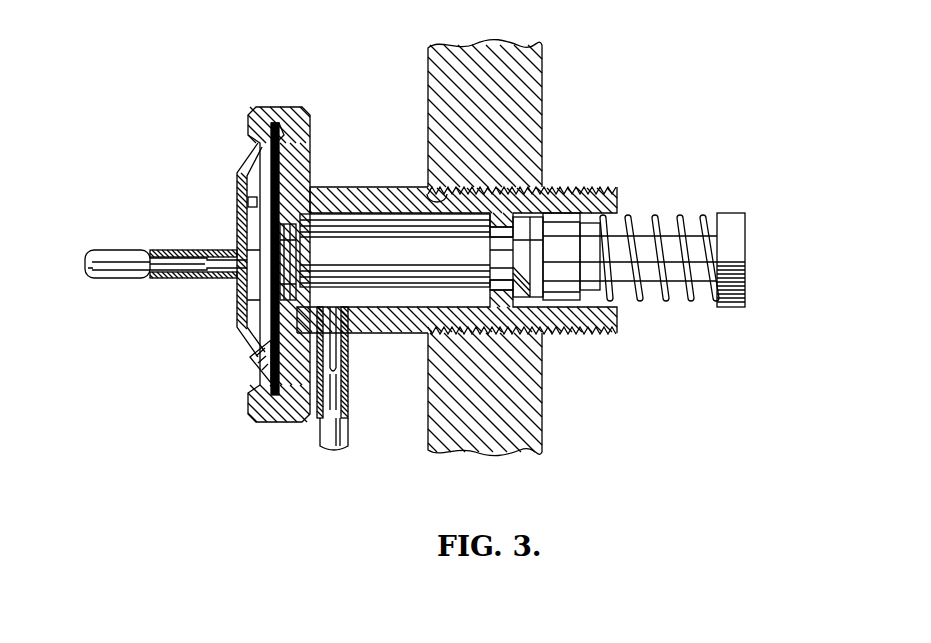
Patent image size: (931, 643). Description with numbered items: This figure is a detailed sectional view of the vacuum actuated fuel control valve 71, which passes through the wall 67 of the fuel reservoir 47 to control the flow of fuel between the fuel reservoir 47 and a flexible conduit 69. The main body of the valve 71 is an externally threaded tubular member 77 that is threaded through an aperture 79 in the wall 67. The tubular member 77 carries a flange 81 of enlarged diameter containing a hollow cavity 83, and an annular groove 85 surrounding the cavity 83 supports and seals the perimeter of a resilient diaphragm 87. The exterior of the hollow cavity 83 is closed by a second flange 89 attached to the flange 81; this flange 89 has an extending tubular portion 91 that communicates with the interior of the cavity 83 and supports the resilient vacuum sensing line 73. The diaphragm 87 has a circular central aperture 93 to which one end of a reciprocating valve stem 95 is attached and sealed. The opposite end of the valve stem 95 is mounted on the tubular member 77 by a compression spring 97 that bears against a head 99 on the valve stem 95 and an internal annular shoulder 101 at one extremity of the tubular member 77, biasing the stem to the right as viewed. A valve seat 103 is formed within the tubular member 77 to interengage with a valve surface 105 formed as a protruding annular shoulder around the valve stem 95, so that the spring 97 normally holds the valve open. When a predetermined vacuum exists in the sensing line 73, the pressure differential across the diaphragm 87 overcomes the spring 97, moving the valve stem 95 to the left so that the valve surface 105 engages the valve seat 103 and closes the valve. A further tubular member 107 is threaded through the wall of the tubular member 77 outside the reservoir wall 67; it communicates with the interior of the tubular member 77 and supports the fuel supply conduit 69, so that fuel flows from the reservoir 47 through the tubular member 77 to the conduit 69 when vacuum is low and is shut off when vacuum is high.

The fuel reservoir 47 is at (522, 265).
The wall 67 is at (428, 85).
The flexible conduit 69 is at (318, 440).
The vacuum actuated fuel control valve 71 is at (242, 232).
The vacuum sensing line 73 is at (105, 272).
The externally threaded tubular member 77 is at (580, 188).
The aperture 79 is at (428, 200).
The flange 81 is at (303, 105).
The hollow cavity 83 is at (250, 203).
The annular groove 85 is at (276, 120).
The resilient diaphragm 87 is at (250, 360).
The flange 89 is at (237, 297).
The extending tubular portion 91 is at (203, 253).
The circular central aperture 93 is at (297, 250).
The reciprocating valve stem 95 is at (370, 222).
The compression spring 97 is at (665, 300).
The head 99 is at (730, 308).
The internal annular shoulder 101 is at (590, 312).
The valve seat 103 is at (505, 236).
The valve surface 105 is at (538, 236).
The tubular member 107 is at (345, 379).